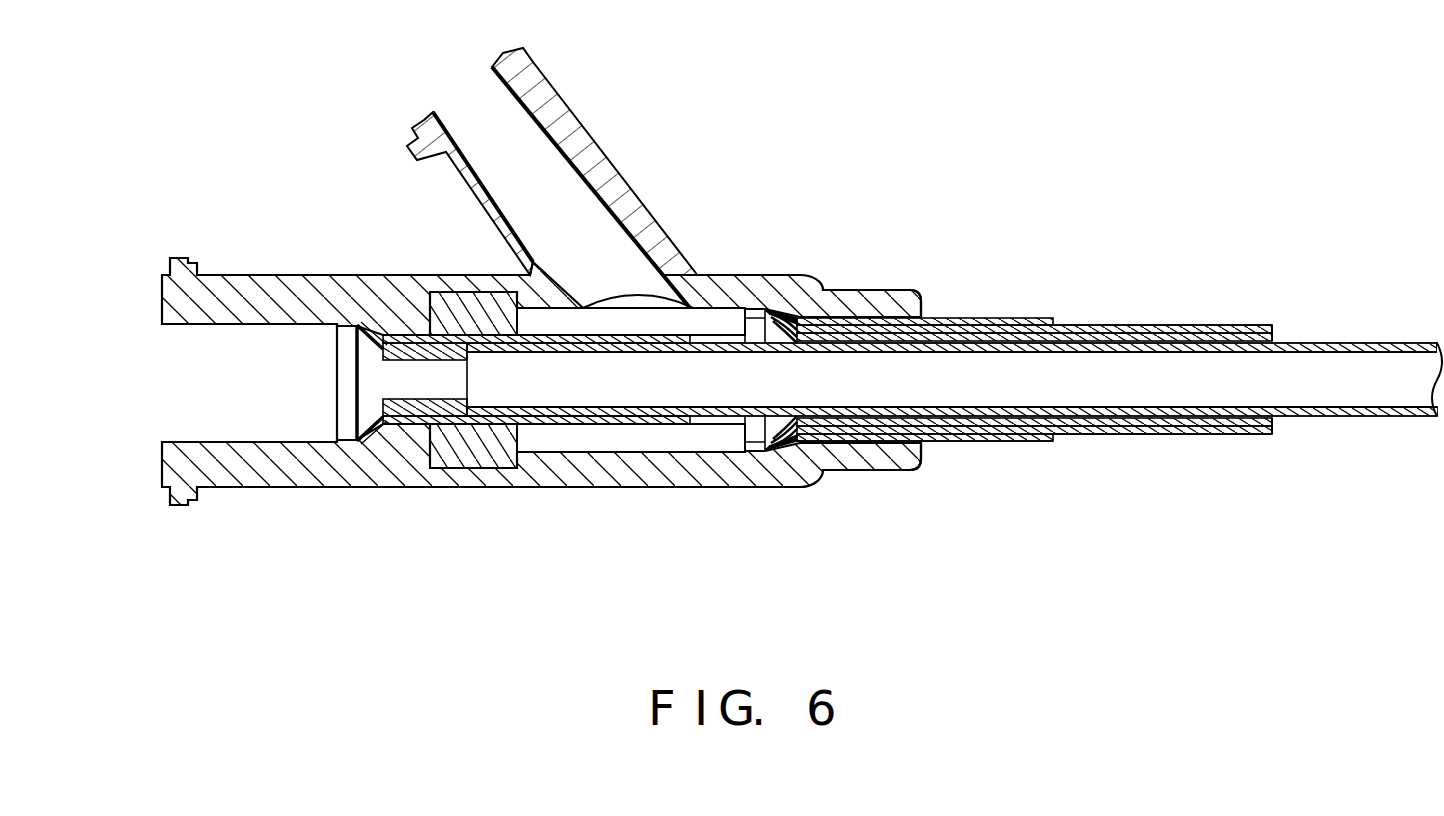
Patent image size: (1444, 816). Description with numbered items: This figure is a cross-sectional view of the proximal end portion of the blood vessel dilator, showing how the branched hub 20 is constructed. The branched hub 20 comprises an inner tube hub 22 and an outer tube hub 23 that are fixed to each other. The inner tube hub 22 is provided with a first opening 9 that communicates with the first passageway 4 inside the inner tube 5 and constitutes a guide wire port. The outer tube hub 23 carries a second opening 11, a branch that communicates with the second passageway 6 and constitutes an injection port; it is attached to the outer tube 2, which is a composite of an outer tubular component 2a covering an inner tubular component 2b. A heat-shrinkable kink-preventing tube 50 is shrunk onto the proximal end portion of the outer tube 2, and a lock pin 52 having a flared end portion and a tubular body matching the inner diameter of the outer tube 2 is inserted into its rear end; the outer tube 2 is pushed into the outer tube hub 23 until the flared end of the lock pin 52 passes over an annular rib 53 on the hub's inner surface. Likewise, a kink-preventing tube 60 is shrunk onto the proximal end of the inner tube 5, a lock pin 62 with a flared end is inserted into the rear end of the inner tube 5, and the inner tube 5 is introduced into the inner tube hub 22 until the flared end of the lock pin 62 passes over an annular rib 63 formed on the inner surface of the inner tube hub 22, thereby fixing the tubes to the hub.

The outer tube 2 is at (1148, 322).
The outer tubular component 2a is at (1093, 323).
The inner tubular component 2b is at (1232, 323).
The first passageway 4 is at (1311, 378).
The inner tube 5 is at (1362, 342).
The second passageway 6 is at (1190, 420).
The first opening 9 is at (160, 368).
The second opening 11 is at (466, 86).
The branched hub 20 is at (661, 158).
The inner tube hub 22 is at (260, 288).
The outer tube hub 23 is at (777, 290).
The kink-preventing tube 50 is at (988, 318).
The lock pin 52 is at (862, 335).
The annular rib 53 is at (757, 447).
The kink-preventing tube 60 is at (637, 418).
The lock pin 62 is at (405, 407).
The annular rib 63 is at (338, 423).